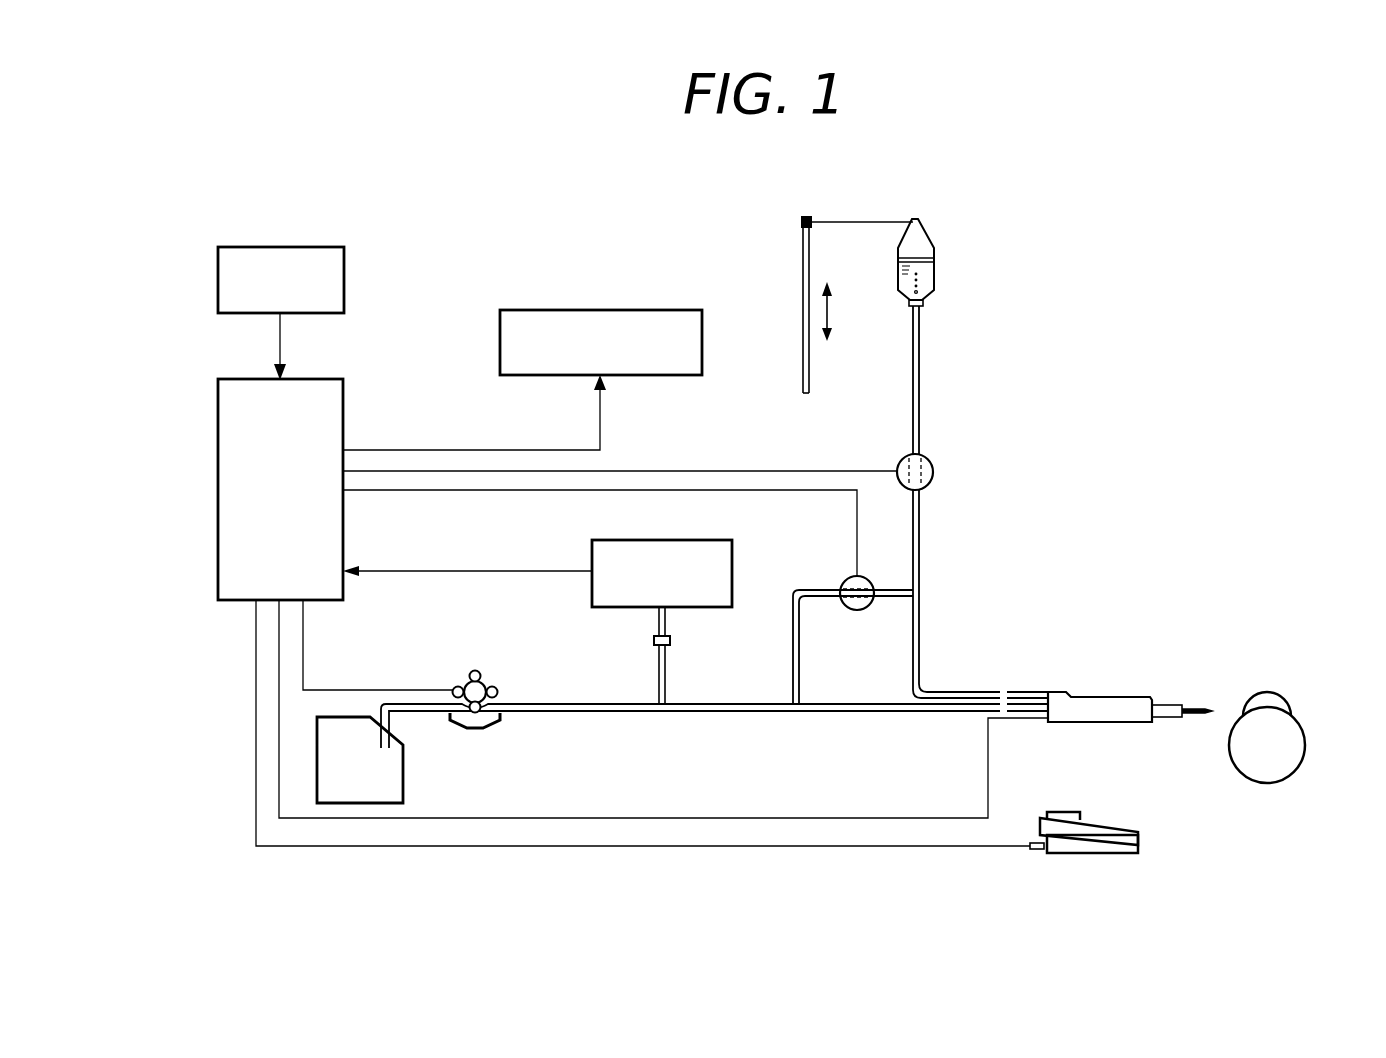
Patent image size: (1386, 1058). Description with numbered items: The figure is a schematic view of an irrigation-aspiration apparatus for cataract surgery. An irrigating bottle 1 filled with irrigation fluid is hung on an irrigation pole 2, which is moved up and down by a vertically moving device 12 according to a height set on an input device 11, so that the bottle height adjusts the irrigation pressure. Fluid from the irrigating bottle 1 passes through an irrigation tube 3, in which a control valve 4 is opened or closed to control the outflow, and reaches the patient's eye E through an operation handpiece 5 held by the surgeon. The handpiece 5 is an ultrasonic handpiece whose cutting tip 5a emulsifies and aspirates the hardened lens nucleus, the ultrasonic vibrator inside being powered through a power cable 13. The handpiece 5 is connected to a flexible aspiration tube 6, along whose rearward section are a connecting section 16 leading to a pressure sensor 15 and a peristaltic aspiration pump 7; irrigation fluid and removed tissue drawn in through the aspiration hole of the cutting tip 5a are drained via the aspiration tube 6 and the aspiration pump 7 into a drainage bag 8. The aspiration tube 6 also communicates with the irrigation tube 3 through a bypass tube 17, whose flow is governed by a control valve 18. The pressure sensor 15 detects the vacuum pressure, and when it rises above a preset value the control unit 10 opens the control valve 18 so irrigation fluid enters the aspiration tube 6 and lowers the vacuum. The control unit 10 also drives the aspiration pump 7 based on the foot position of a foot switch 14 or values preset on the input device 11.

The irrigating bottle 1 is at (934, 270).
The irrigation pole 2 is at (800, 247).
The irrigation tube 3 is at (919, 381).
The control valve 4 is at (933, 465).
The operation handpiece 5 is at (1120, 708).
The cutting tip 5a is at (1193, 708).
The aspiration tube 6 is at (853, 704).
The peristaltic aspiration pump 7 is at (454, 668).
The drainage bag 8 is at (393, 781).
The control unit 10 is at (332, 379).
The input device 11 is at (332, 247).
The vertically moving device 12 is at (664, 310).
The power cable 13 is at (630, 818).
The foot switch 14 is at (1099, 853).
The pressure sensor 15 is at (719, 540).
The connecting section 16 is at (670, 640).
The bypass tube 17 is at (793, 680).
The control valve 18 is at (843, 582).
The patient's eye E is at (1292, 740).